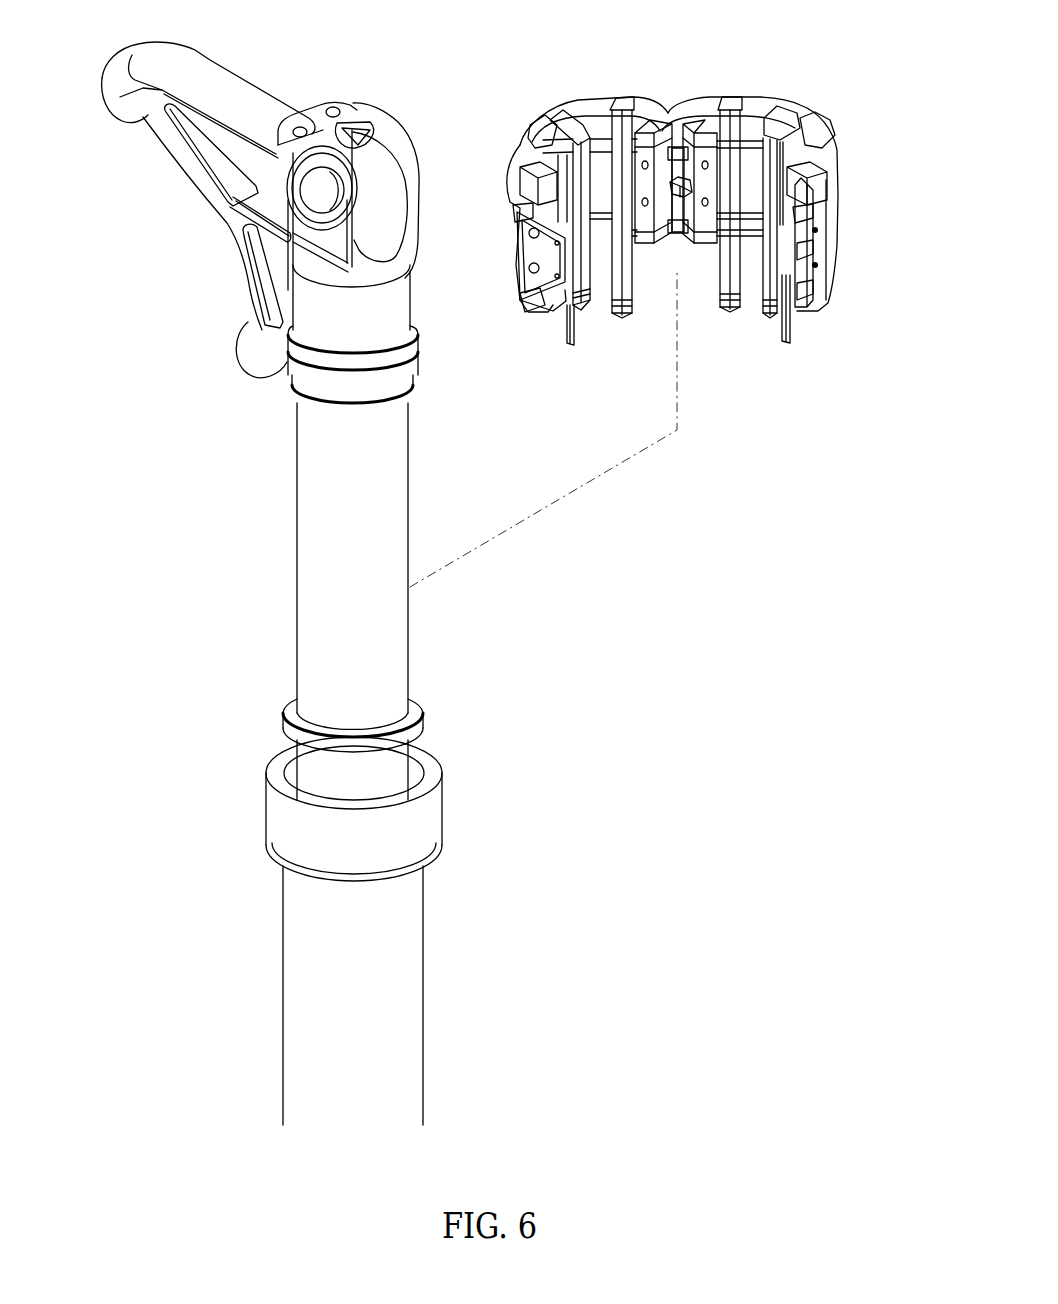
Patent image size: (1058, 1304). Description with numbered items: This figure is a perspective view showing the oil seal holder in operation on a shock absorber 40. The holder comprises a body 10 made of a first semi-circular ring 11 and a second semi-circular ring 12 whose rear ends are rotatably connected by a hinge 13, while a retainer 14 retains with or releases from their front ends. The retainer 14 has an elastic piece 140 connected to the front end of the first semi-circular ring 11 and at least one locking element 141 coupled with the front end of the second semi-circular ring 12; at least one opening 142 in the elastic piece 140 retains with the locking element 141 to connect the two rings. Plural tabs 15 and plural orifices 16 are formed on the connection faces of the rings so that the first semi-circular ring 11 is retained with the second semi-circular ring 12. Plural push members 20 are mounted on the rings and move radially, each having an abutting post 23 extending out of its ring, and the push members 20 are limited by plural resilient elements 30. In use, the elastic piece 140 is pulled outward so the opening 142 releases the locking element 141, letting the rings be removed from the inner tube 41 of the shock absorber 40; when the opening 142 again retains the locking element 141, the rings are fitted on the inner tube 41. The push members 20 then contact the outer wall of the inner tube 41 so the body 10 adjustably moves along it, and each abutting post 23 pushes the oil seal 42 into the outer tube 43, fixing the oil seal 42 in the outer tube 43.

The body 10 is at (485, 118).
The first semi-circular ring 11 is at (516, 196).
The second semi-circular ring 12 is at (830, 192).
The hinge 13 is at (674, 175).
The retainer 14 is at (508, 366).
The tab 15 is at (678, 218).
The orifice 16 is at (648, 245).
The push member 20 is at (570, 112).
The abutting post 23 is at (622, 315).
The resilient element 30 is at (516, 215).
The shock absorber 40 is at (515, 895).
The inner tube 41 is at (318, 512).
The oil seal 42 is at (292, 698).
The outer tube 43 is at (278, 824).
The elastic piece 140 is at (535, 250).
The locking element 141 is at (818, 230).
The opening 142 is at (552, 310).